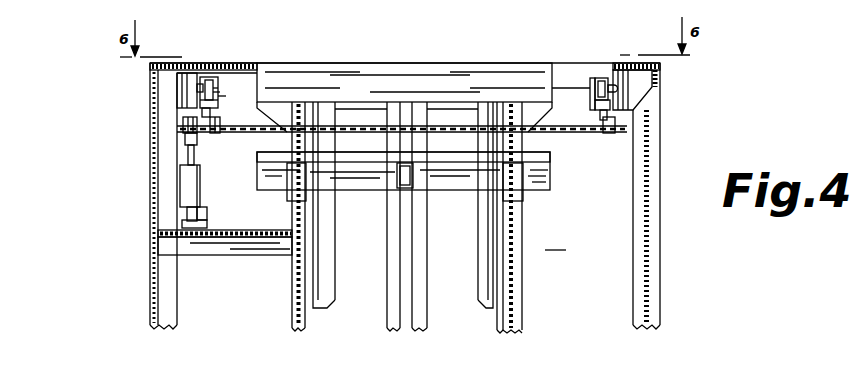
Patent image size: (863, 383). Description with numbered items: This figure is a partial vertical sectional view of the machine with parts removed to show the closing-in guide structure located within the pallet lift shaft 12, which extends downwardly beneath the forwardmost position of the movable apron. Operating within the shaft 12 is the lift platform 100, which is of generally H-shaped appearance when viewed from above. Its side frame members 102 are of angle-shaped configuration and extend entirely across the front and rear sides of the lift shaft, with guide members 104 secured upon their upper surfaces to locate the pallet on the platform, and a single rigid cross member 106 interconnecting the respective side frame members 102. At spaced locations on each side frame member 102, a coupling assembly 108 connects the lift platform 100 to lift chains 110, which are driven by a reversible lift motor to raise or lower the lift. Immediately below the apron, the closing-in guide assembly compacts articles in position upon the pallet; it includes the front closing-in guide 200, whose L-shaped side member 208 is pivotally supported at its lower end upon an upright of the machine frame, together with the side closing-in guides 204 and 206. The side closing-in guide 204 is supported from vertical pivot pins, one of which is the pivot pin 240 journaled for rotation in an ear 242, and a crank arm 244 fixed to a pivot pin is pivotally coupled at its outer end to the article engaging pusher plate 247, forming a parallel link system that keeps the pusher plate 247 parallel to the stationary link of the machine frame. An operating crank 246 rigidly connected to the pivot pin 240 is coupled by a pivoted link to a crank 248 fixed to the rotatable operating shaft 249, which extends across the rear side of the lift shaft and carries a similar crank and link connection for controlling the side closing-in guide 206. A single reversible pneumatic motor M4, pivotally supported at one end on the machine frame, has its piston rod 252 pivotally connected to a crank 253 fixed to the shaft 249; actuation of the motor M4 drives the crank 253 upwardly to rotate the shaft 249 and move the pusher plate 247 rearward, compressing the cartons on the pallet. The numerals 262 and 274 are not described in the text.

The shaft 12 is at (405, 196).
The lift platform 100 is at (472, 196).
The side frame members 102 is at (550, 172).
The guide members 104 is at (548, 156).
The cross member 106 is at (392, 175).
The coupling assembly 108 is at (306, 178).
The lift chains 110 is at (295, 288).
The front closing-in guide 200 is at (442, 47).
The side closing-in guide 204 is at (222, 93).
The side closing-in guide 206 is at (588, 82).
The side member 208 is at (375, 255).
The pivot pin 240 is at (196, 86).
The ear 242 is at (182, 120).
The crank arm 244 is at (193, 82).
The operating crank 246 is at (199, 92).
The pusher plate 247 is at (219, 92).
The crank 248 is at (224, 97).
The operating shaft 249 is at (250, 133).
The piston rod 252 is at (187, 152).
The crank 253 is at (195, 135).
The clamp 262 is at (216, 91).
The mount 274 is at (201, 215).
The pneumatic motor M4 is at (188, 183).